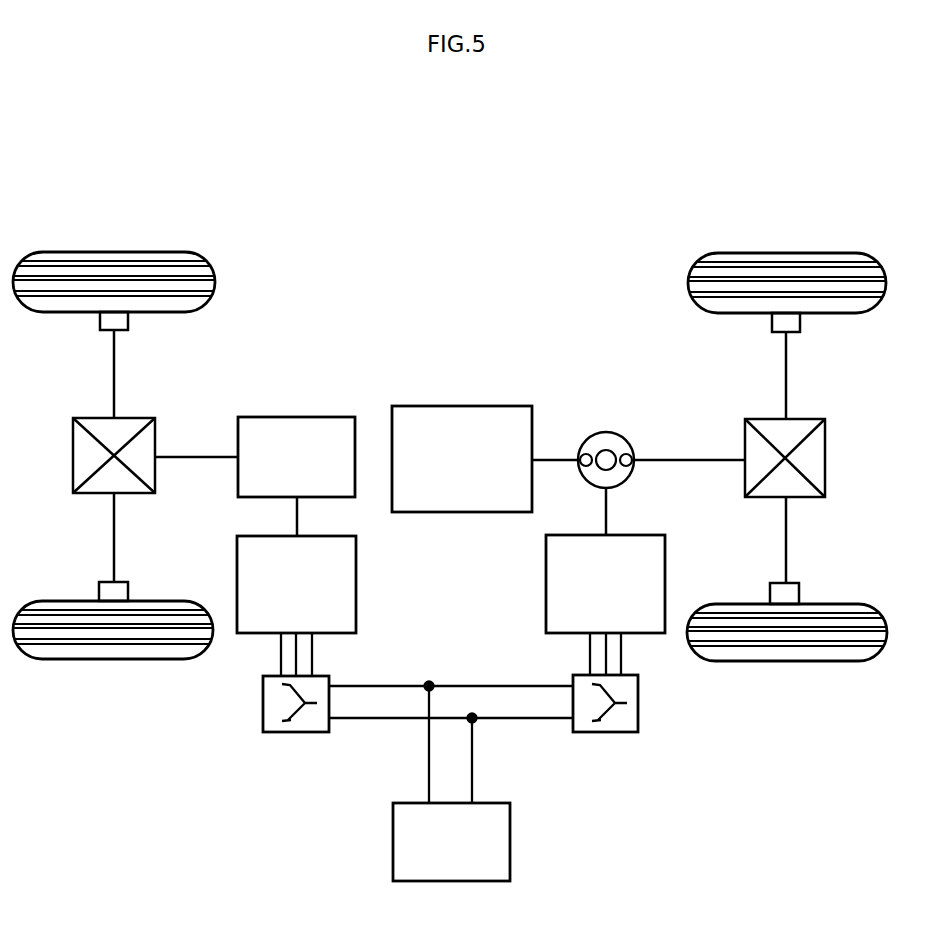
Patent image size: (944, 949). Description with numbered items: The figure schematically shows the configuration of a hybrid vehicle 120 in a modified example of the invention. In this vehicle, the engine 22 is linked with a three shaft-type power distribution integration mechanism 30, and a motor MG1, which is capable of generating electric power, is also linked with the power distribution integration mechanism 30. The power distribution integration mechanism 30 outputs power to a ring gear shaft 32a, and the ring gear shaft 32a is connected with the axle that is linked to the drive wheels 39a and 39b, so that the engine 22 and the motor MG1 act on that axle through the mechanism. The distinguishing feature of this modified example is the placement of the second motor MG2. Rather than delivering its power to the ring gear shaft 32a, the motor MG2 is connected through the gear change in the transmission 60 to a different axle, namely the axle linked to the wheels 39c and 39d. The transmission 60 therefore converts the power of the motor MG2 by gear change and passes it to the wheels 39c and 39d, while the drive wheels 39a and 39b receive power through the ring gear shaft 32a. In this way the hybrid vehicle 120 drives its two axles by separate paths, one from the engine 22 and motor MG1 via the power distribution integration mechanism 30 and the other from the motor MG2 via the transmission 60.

The hybrid vehicle 120 is at (496, 196).
The drive wheel 39a is at (786, 253).
The drive wheel 39b is at (786, 661).
The wheel 39c is at (115, 252).
The wheel 39d is at (115, 659).
The transmission 60 is at (296, 417).
The engine 22 is at (463, 406).
The power distribution integration mechanism 30 is at (607, 432).
The ring gear shaft 32a is at (700, 460).
The motor MG1 is at (546, 585).
The motor MG2 is at (356, 587).